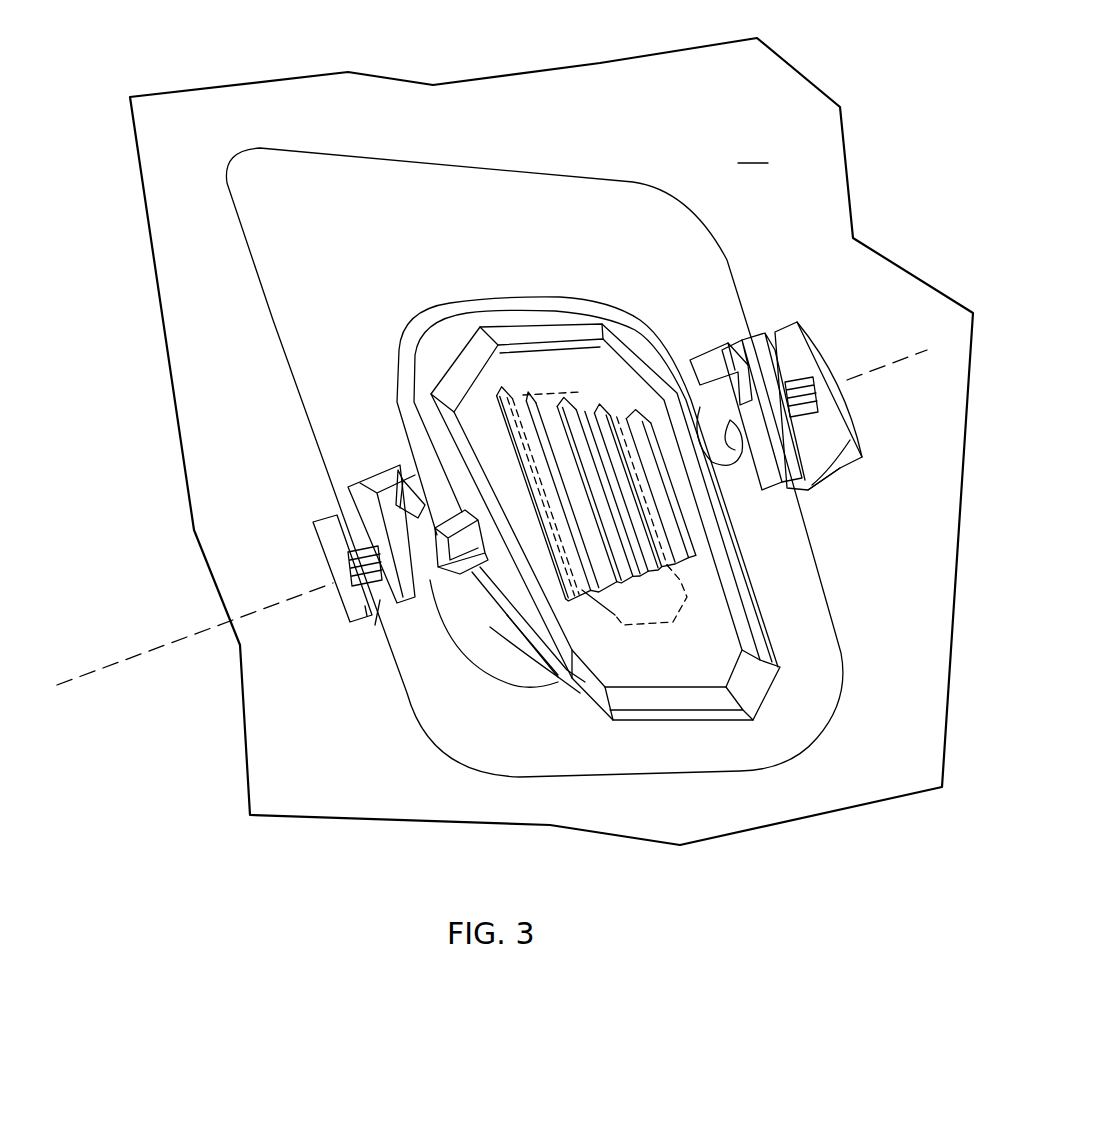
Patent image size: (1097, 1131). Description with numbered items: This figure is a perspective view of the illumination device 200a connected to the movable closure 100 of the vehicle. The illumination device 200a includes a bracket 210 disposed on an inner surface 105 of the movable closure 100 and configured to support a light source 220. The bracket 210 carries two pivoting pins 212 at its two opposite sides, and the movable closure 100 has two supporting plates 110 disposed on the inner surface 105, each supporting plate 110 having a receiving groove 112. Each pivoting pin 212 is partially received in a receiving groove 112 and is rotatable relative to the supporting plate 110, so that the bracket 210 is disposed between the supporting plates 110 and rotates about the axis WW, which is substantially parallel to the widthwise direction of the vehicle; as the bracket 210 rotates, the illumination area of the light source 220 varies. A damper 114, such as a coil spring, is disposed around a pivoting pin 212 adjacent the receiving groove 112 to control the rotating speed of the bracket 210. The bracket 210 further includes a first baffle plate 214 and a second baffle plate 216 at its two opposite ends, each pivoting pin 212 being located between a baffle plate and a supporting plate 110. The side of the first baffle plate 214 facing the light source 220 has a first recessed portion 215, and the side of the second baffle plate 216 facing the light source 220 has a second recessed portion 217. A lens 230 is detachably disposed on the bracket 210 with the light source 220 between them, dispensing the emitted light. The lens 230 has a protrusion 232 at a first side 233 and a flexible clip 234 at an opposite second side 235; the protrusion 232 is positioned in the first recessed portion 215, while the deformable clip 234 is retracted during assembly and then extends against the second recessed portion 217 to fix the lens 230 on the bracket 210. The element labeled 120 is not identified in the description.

The movable closure 100 is at (546, 66).
The inner surface 105 is at (756, 151).
The supporting plate 110 is at (355, 605).
The receiving groove 112 is at (800, 380).
The damper 114 is at (348, 556).
The washer 120 is at (768, 345).
The illumination device 200a is at (748, 266).
The bracket 210 is at (494, 170).
The pivoting pin 212 is at (380, 605).
The first baffle plate 214 is at (345, 485).
The first recessed portion 215 is at (398, 470).
The second baffle plate 216 is at (745, 352).
The second recessed portion 217 is at (700, 365).
The light source 220 is at (646, 618).
The lens 230 is at (540, 336).
The protrusion 232 is at (442, 585).
The first side 233 is at (503, 617).
The flexible clip 234 is at (743, 480).
The second side 235 is at (745, 578).
The axis WW is at (925, 346).